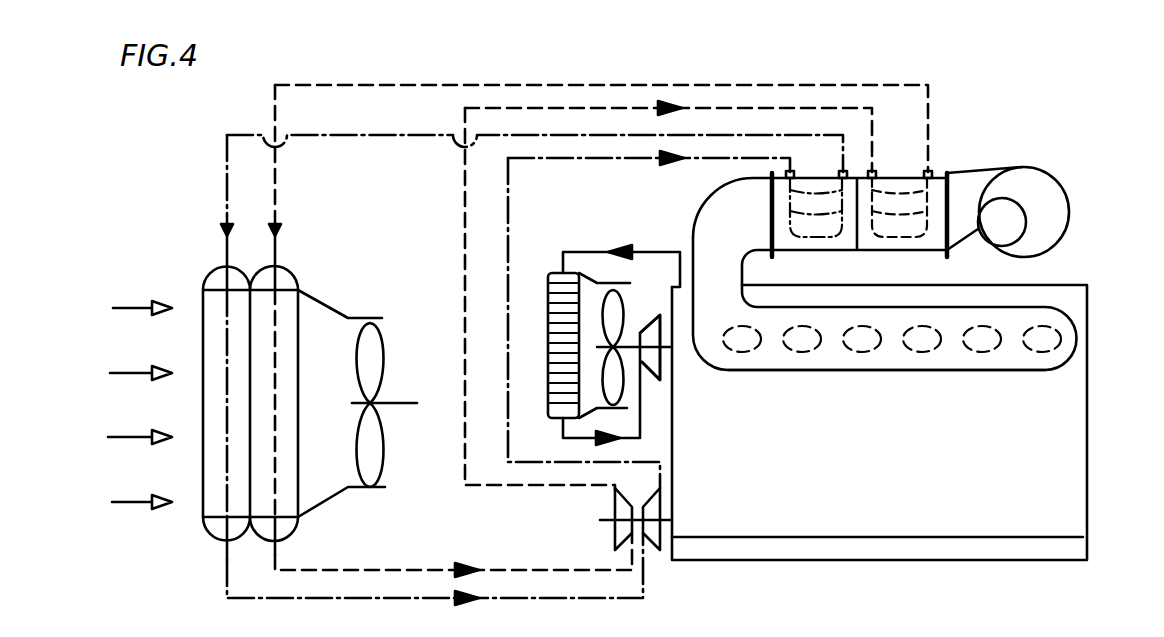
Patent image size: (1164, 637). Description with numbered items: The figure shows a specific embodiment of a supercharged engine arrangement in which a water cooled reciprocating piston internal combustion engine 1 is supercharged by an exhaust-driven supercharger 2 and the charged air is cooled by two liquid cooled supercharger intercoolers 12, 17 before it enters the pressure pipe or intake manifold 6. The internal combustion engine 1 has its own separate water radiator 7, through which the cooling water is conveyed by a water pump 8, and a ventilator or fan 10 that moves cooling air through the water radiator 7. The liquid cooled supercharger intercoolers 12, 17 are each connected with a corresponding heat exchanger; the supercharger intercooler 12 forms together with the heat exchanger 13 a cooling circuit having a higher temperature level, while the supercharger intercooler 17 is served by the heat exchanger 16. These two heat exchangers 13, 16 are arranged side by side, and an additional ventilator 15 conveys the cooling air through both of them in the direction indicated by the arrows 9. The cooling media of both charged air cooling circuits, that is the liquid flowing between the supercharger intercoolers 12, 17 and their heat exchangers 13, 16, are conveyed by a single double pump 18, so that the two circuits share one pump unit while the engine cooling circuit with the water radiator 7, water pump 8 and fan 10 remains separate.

The internal combustion engine 1 is at (1062, 467).
The exhaust-driven supercharger 2 is at (1038, 178).
The intake manifold 6 is at (1020, 316).
The water radiator 7 is at (560, 283).
The water pump 8 is at (645, 362).
The arrows 9 is at (158, 297).
The ventilator 10 is at (615, 306).
The liquid cooled supercharger intercooler 12 is at (935, 183).
The heat exchanger 13 is at (281, 298).
The additional ventilator 15 is at (370, 341).
The heat exchanger 16 is at (220, 380).
The liquid cooled supercharger intercooler 17 is at (800, 183).
The double pump 18 is at (652, 508).